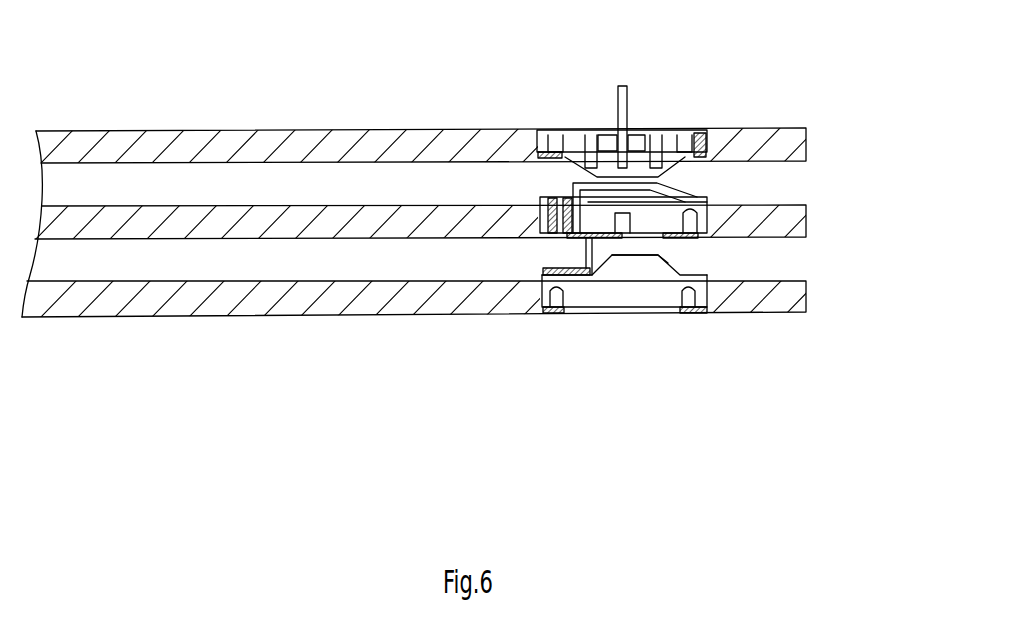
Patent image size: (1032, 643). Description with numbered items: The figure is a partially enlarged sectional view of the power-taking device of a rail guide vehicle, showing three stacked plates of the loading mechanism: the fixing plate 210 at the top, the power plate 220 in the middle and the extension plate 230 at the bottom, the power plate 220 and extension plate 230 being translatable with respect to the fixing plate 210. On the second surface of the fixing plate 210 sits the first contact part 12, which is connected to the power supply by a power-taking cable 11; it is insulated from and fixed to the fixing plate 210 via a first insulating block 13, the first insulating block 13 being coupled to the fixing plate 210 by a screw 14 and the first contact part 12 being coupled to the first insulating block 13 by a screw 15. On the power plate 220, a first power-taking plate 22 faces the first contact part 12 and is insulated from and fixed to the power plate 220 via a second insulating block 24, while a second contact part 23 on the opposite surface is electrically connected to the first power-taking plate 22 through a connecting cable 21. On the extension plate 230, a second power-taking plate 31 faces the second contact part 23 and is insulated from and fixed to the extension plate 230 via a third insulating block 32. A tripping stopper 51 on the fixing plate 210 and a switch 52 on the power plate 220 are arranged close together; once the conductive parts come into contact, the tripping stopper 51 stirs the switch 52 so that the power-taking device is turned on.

The power-taking cable 11 is at (616, 85).
The first contact part 12 is at (680, 172).
The first insulating block 13 is at (708, 131).
The screw 14 is at (559, 134).
The screw 15 is at (664, 131).
The connecting cable 21 is at (588, 245).
The first power-taking plate 22 is at (672, 195).
The second contact part 23 is at (657, 256).
The second insulating block 24 is at (690, 194).
The second power-taking plate 31 is at (678, 270).
The third insulating block 32 is at (662, 300).
The tripping stopper 51 is at (542, 199).
The switch 52 is at (537, 184).
The fixing plate 210 is at (818, 101).
The power plate 220 is at (808, 228).
The extension plate 230 is at (808, 300).